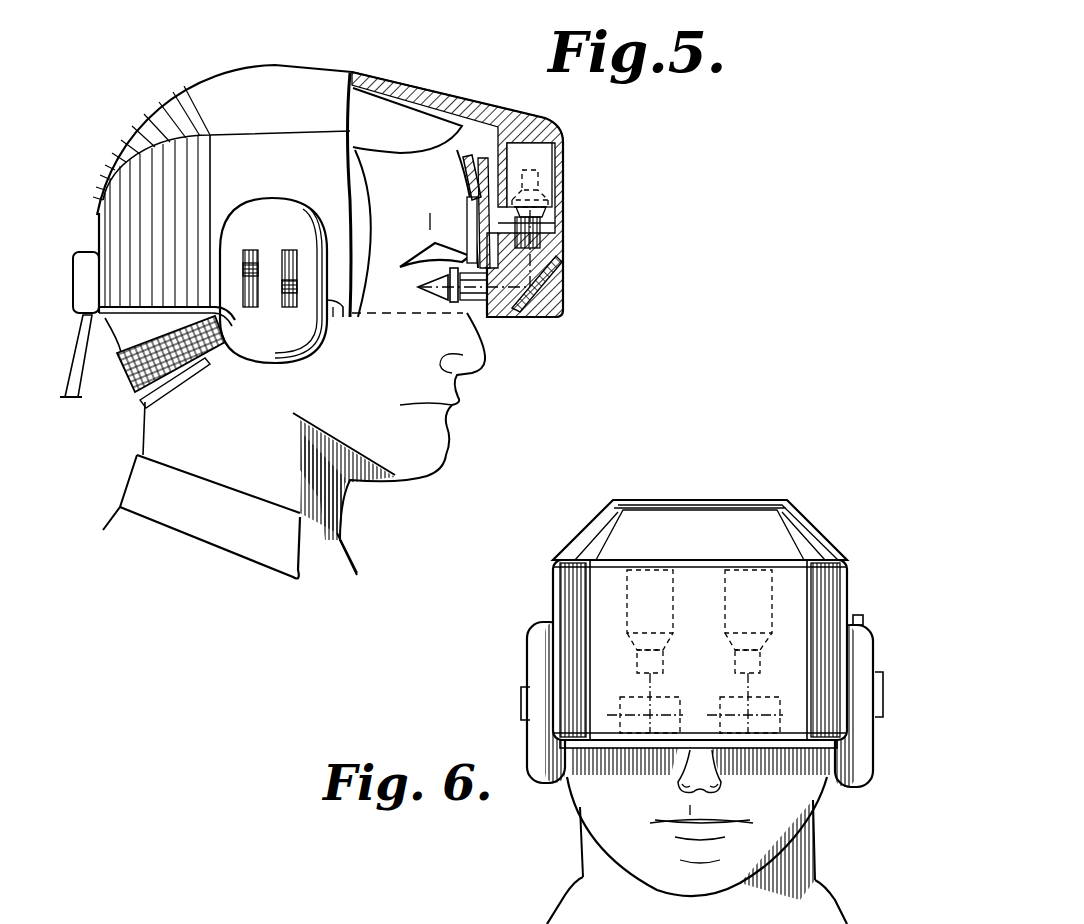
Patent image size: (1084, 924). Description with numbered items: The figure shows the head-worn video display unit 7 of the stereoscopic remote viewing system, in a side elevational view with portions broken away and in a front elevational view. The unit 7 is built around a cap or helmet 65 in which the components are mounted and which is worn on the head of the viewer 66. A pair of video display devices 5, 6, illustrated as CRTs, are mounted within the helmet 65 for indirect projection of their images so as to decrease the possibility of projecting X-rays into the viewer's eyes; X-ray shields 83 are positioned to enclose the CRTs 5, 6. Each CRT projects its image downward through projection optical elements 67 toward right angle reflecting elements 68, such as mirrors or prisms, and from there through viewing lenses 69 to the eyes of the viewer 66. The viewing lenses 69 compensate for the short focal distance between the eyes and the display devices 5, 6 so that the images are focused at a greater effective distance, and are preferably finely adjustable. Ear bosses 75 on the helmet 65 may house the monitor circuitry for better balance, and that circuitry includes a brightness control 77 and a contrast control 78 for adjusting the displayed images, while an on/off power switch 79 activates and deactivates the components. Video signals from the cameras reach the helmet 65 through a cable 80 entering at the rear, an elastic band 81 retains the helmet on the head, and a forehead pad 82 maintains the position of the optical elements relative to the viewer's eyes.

In FIG. 5, the video display device 5 is at (548, 181).
In FIG. 6, the video display device 5 is at (727, 612).
In FIG. 6, the video display device 6 is at (627, 612).
In FIG. 5, the video display unit 7 is at (565, 137).
In FIG. 6, the video display unit 7 is at (777, 500).
In FIG. 5, the helmet 65 is at (283, 66).
In FIG. 6, the helmet 65 is at (711, 498).
In FIG. 5, the viewer 66 is at (260, 460).
In FIG. 6, the viewer 66 is at (592, 856).
In FIG. 5, the projection optical elements 67 is at (542, 232).
In FIG. 6, the projection optical elements 67 is at (735, 660).
In FIG. 5, the right angle reflecting elements 68 is at (545, 272).
In FIG. 6, the right angle reflecting elements 68 is at (622, 700).
In FIG. 5, the viewing lenses 69 is at (493, 308).
In FIG. 5, the ear bosses 75 is at (304, 352).
In FIG. 6, the ear bosses 75 is at (553, 785).
In FIG. 5, the brightness control 77 is at (251, 260).
In FIG. 5, the contrast control 78 is at (295, 265).
In FIG. 6, the contrast control 78 is at (519, 687).
In FIG. 6, the on/off power switch 79 is at (858, 614).
In FIG. 5, the cable 80 is at (80, 348).
In FIG. 5, the elastic band 81 is at (130, 386).
In FIG. 5, the forehead pad 82 is at (465, 176).
In FIG. 5, the X-ray shields 83 is at (512, 155).